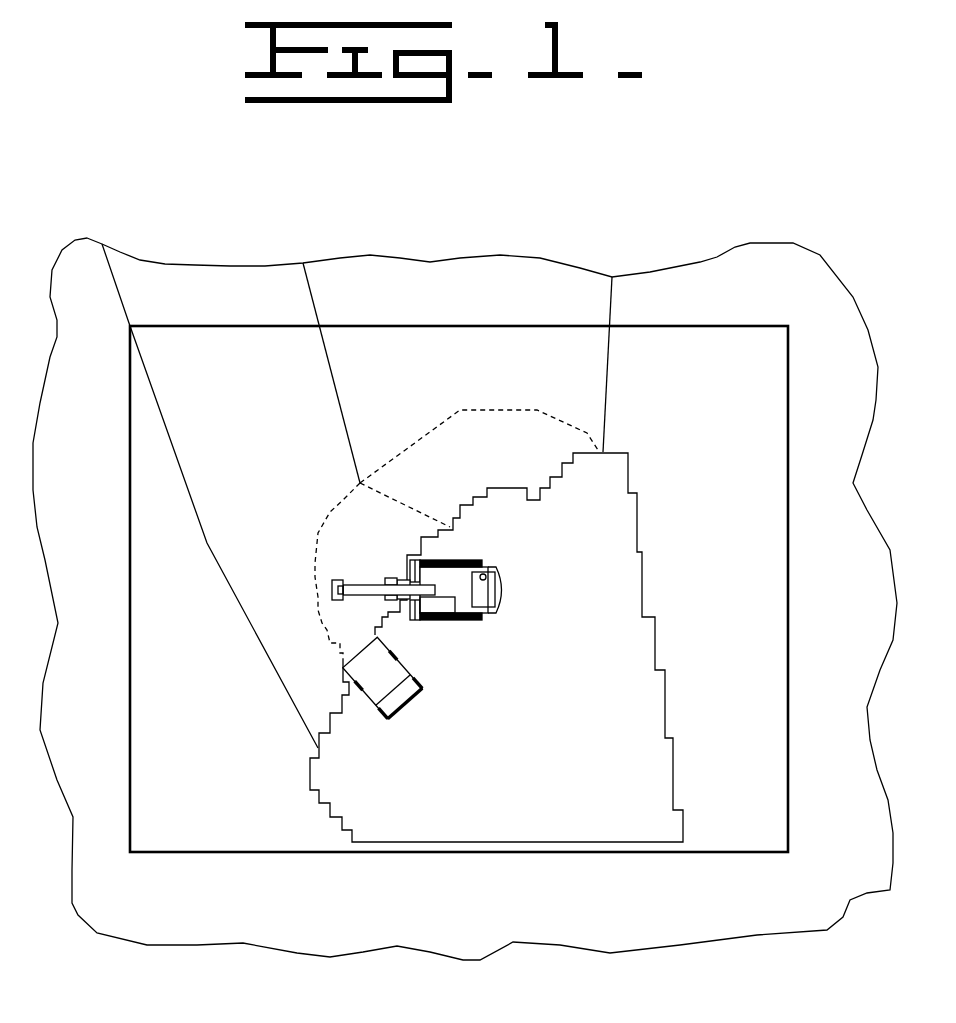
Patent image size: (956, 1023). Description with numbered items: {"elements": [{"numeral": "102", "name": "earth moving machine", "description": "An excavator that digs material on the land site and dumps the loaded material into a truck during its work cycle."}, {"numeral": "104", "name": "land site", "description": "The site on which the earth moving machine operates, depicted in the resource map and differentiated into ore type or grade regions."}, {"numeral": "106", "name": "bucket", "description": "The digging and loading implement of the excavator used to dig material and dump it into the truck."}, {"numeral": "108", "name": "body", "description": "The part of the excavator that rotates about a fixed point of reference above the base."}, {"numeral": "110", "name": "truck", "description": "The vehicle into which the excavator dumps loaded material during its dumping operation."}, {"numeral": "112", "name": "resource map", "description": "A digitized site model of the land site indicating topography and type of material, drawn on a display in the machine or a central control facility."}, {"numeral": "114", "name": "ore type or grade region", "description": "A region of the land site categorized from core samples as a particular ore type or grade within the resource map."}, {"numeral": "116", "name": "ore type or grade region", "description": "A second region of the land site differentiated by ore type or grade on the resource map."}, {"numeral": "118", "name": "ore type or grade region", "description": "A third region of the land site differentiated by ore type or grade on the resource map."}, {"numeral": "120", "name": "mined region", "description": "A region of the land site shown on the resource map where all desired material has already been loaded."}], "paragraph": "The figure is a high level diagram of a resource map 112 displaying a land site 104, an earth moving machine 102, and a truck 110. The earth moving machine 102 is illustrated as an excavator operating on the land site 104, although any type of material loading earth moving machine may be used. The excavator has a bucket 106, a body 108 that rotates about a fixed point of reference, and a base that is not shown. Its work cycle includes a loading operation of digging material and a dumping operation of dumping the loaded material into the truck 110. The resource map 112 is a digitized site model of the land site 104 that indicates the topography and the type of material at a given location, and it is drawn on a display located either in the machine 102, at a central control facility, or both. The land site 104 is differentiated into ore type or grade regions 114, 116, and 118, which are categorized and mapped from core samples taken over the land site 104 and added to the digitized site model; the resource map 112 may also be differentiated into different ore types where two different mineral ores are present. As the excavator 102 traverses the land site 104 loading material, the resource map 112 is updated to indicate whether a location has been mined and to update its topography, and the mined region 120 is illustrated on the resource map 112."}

The excavator (work machine) 102 is at (456, 601).
The worksite 104 is at (682, 943).
The boom and bucket of excavator 106 is at (336, 580).
The operator cab 108 is at (505, 606).
The haul truck 110 is at (412, 693).
The boundary of worksite area 112 is at (700, 852).
The planned excavation region 114 is at (488, 380).
The unexcavated region 116 is at (735, 450).
The region of worksite 118 is at (275, 444).
The excavated region 120 is at (553, 778).